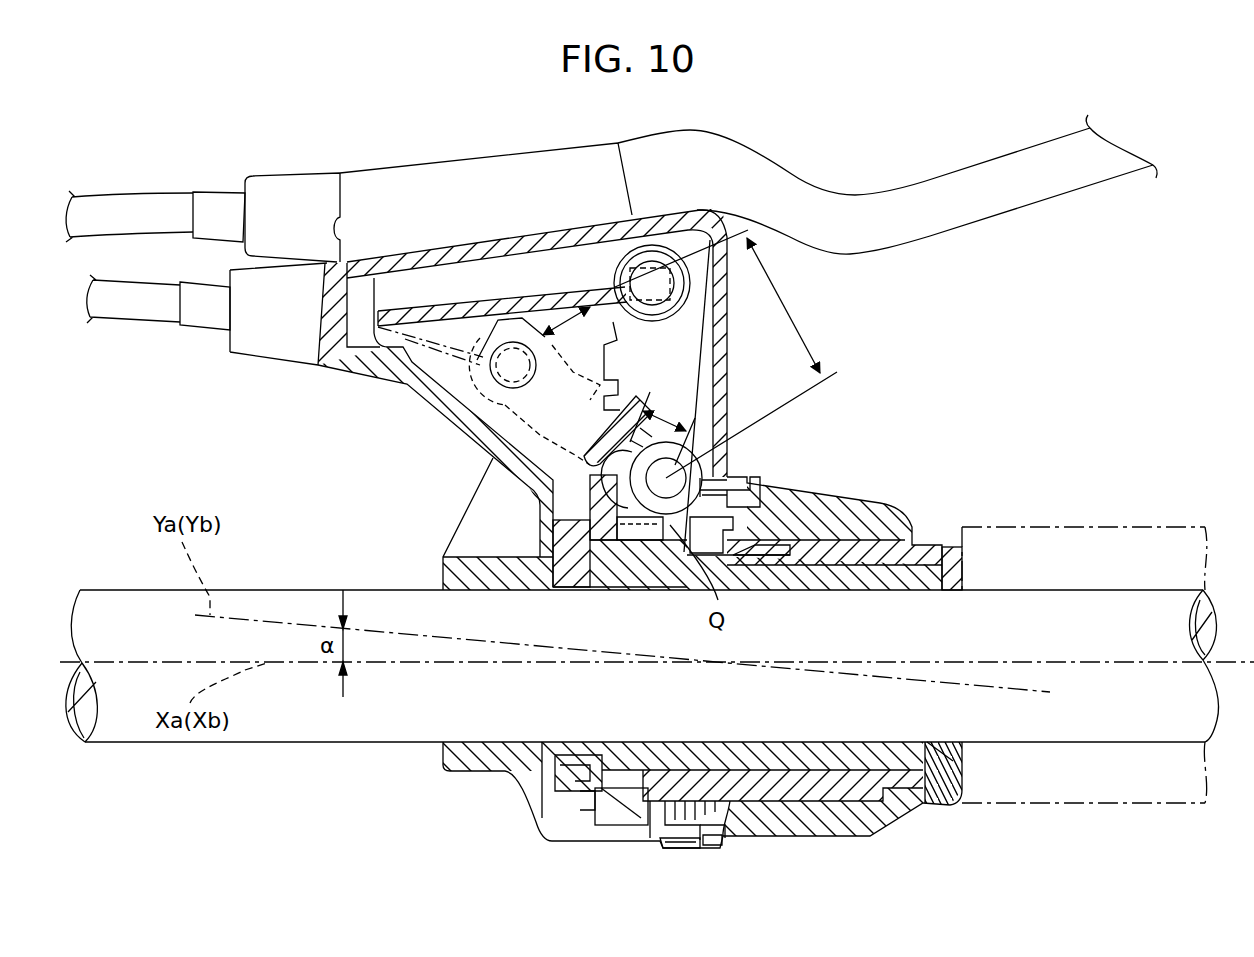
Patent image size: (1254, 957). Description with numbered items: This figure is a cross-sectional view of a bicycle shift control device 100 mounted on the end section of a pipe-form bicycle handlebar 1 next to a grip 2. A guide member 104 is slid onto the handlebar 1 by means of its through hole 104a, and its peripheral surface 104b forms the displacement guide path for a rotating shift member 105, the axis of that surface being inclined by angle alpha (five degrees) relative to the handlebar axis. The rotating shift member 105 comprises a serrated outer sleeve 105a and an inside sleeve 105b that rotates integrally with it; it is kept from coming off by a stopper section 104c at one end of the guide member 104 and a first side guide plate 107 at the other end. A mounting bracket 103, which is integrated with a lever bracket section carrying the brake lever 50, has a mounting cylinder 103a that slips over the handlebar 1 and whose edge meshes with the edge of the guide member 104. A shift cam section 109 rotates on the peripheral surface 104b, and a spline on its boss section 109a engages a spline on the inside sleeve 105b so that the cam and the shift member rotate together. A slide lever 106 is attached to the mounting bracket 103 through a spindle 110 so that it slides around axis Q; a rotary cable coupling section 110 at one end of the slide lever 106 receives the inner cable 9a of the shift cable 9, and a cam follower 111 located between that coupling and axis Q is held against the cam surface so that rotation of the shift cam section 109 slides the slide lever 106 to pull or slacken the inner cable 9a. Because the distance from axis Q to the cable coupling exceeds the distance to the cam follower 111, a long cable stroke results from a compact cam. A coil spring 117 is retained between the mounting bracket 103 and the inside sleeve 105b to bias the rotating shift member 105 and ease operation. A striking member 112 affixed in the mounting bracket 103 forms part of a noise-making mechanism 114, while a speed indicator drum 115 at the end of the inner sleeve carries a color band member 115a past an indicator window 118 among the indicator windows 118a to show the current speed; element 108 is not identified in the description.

The bicycle handlebar 1 is at (305, 745).
The grip 2 is at (1110, 523).
The shift cable 9 is at (148, 310).
The inner cable 9a is at (450, 300).
The brake lever 50 is at (948, 216).
The shift control device 100 is at (705, 386).
The mounting bracket 103 is at (443, 417).
The mounting cylinder 103a is at (590, 745).
The guide member 104 is at (853, 578).
The through hole 104a is at (897, 740).
The peripheral surface 104b is at (863, 842).
The stopper section 104c is at (638, 503).
The rotating shift member 105 is at (848, 500).
The outer sleeve 105a is at (893, 538).
The inside sleeve 105b is at (928, 558).
The slide lever 106 is at (675, 357).
The first side guide plate 107 is at (940, 790).
The block 108 is at (563, 573).
The shift cam section 109 is at (597, 497).
The boss section 109a is at (645, 570).
The spindle 110 is at (628, 268).
The cam follower 111 is at (607, 457).
The striking member 112 is at (615, 800).
The noise-making mechanism 114 is at (585, 806).
The speed indicator drum 115 is at (757, 500).
The color band member 115a is at (677, 843).
The coil spring 117 is at (763, 570).
The indicator window 118 is at (697, 868).
The indicator windows 118a is at (690, 848).